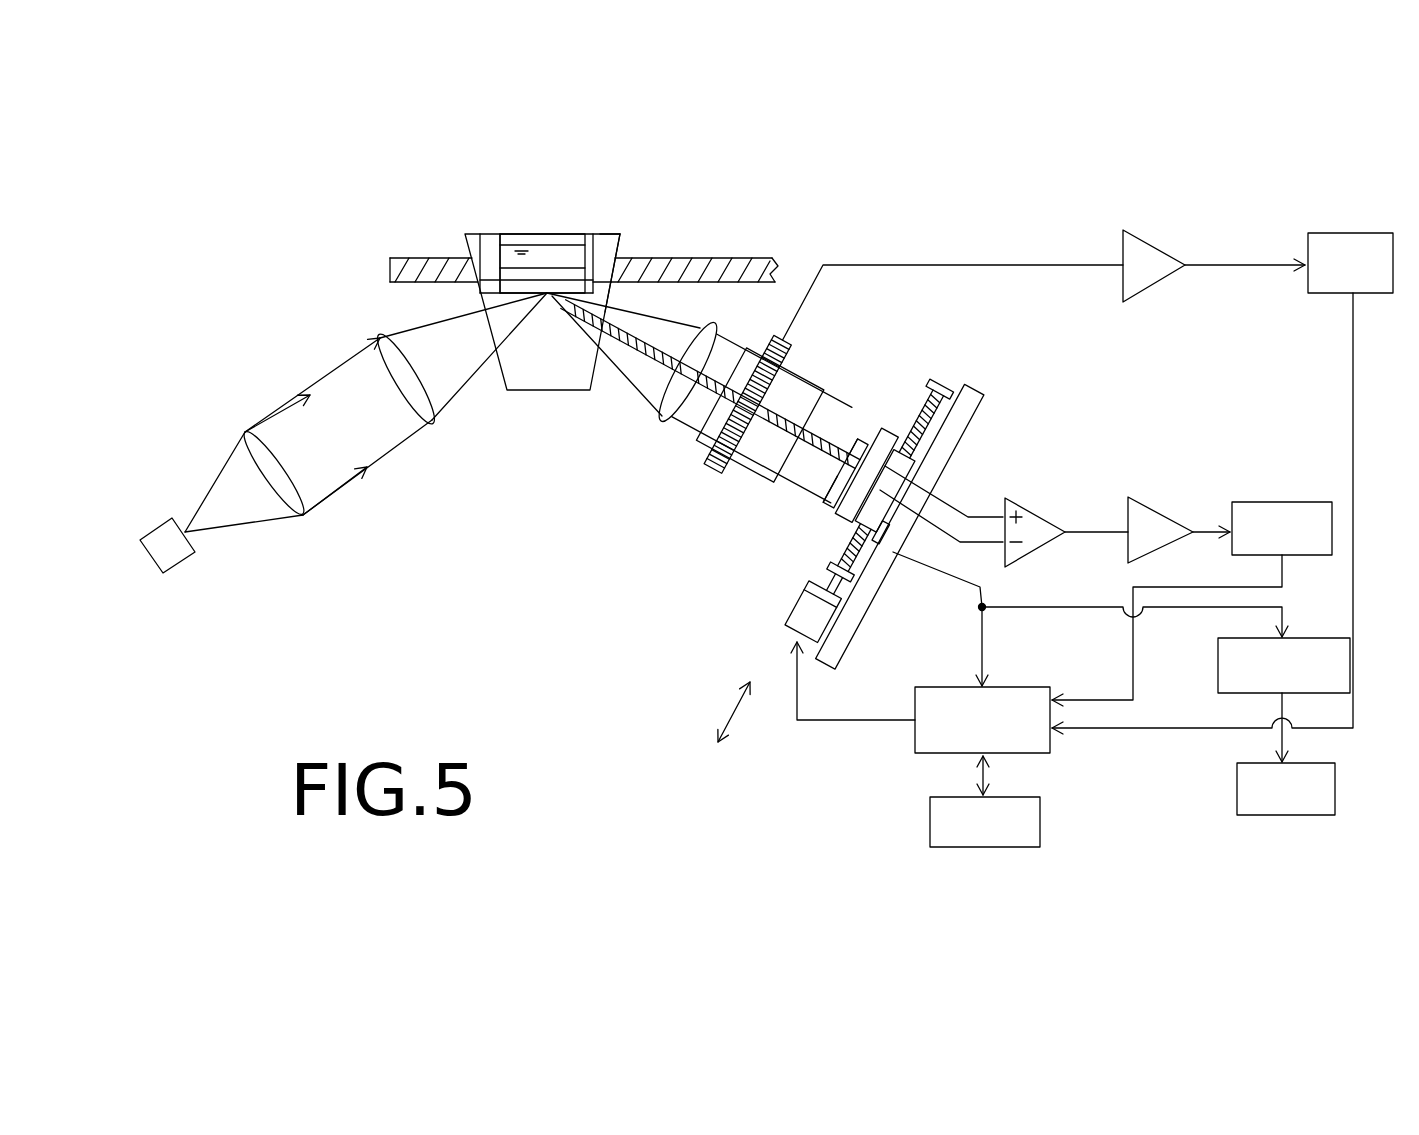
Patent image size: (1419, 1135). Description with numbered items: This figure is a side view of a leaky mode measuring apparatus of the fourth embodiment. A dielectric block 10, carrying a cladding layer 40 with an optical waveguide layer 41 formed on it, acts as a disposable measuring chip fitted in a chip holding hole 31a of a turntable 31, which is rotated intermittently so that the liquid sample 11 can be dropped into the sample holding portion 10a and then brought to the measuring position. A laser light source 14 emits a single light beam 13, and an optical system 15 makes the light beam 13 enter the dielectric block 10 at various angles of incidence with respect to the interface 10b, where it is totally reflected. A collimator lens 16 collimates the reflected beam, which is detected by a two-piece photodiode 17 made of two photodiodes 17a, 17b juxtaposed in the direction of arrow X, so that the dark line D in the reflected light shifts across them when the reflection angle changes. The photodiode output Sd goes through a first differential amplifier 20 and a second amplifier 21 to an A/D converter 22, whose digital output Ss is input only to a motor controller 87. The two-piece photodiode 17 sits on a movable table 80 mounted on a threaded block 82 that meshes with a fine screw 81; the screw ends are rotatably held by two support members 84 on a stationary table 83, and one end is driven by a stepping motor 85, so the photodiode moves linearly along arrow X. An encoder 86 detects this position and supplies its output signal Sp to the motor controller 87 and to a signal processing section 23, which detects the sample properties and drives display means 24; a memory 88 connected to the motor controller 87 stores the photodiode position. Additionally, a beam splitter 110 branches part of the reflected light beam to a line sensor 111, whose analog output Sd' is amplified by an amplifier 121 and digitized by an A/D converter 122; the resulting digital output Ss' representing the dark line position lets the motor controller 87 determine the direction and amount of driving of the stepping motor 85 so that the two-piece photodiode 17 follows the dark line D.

The dielectric block 10 is at (560, 407).
The sample holding portion 10a is at (605, 232).
The interface 10b is at (600, 252).
The liquid sample 11 is at (550, 246).
The light beam 13 is at (222, 478).
The laser light source 14 is at (168, 522).
The optical system 15 is at (334, 518).
The collimator lens 16 is at (716, 332).
The two-piece photodiode 17 is at (826, 470).
The photodiode 17a is at (826, 504).
The photodiode 17b is at (868, 425).
The first differential amplifier 20 is at (1038, 497).
The second amplifier 21 is at (1158, 497).
The A/D converter 22 is at (1300, 501).
The signal processing section 23 is at (1218, 676).
The display means 24 is at (1237, 797).
The turntable 31 is at (733, 254).
The chip holding hole 31a is at (603, 285).
The cladding layer 40 is at (507, 288).
The optical waveguide layer 41 is at (500, 268).
The movable table 80 is at (888, 427).
The fine screw 81 is at (836, 556).
The threaded block 82 is at (918, 460).
The stationary table 83 is at (972, 390).
The support member 84 is at (941, 384).
The stepping motor 85 is at (797, 616).
The encoder 86 is at (893, 550).
The motor controller 87 is at (1028, 686).
The memory 88 is at (1042, 826).
The beam splitter 110 is at (696, 445).
The line sensor 111 is at (720, 484).
The amplifier 121 is at (1160, 248).
The A/D converter 122 is at (1350, 230).
The dark line D is at (646, 362).
The output of the differential amplifier Sd is at (1074, 564).
The analog output of the line sensor Sd' is at (992, 232).
The output signal of the A/D converter Ss is at (1309, 578).
The digital output of the A/D converter Ss' is at (1318, 338).
The output signal of the encoder Sp is at (980, 642).
The arrow X is at (728, 722).